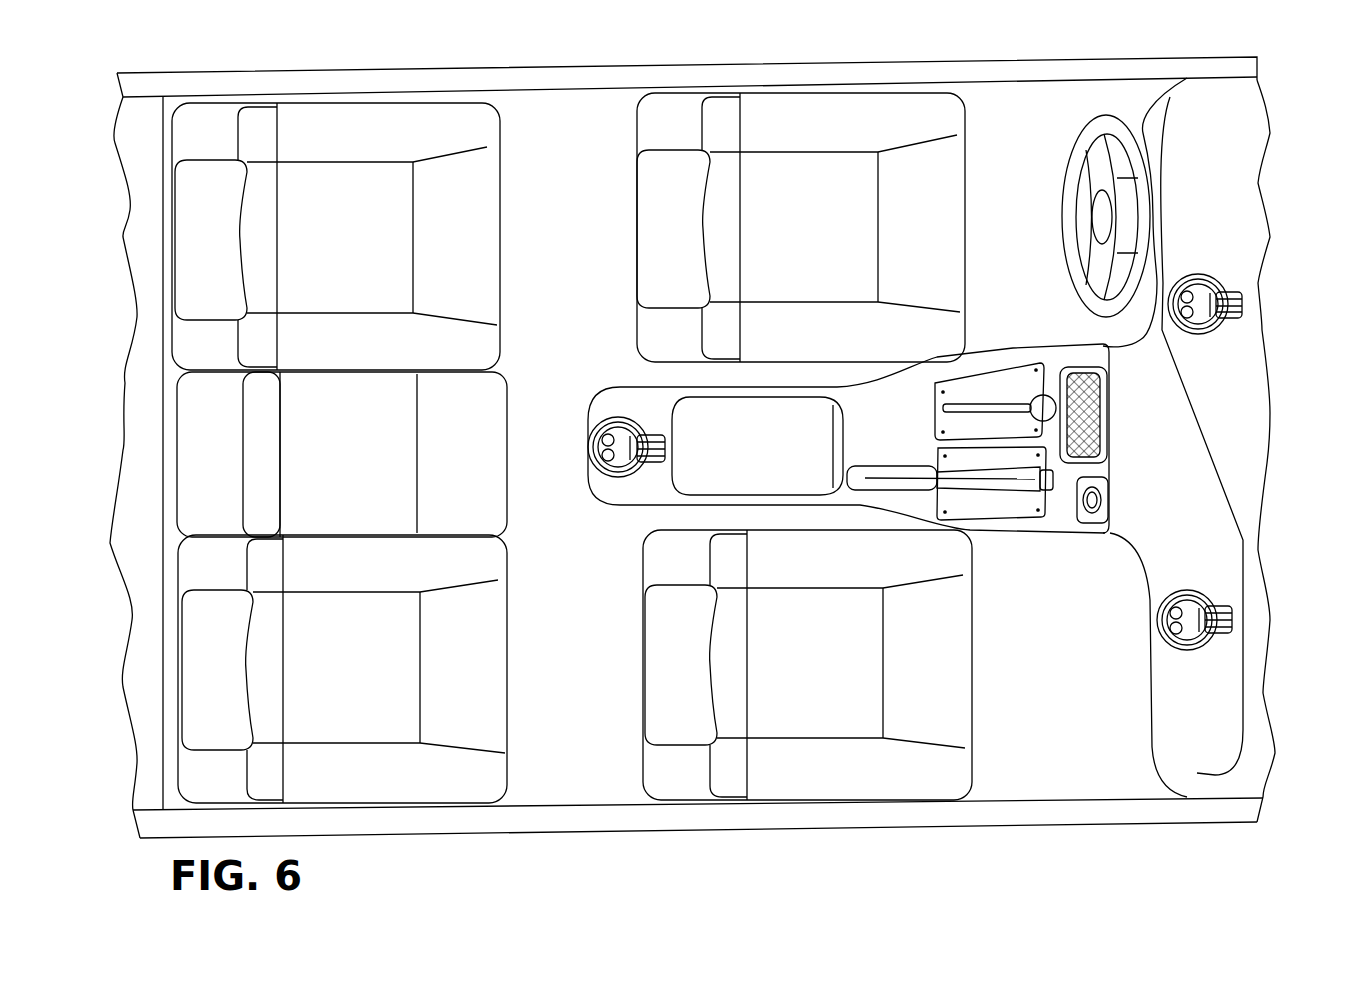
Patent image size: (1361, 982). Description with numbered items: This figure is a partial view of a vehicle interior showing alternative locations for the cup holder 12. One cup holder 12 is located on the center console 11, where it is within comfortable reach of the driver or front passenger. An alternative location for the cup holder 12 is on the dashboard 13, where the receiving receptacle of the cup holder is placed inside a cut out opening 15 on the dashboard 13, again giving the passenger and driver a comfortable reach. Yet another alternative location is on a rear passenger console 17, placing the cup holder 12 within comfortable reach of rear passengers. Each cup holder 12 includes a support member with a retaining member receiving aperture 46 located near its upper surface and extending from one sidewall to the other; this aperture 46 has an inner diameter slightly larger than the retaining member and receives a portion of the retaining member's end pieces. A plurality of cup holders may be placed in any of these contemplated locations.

The center console 11 is at (1017, 547).
The cup holder 12 is at (607, 430).
The dashboard 13 is at (1275, 430).
The cut out opening 15 is at (1221, 323).
The rear passenger console 17 is at (672, 467).
The retaining member receiving aperture 46 is at (1240, 307).